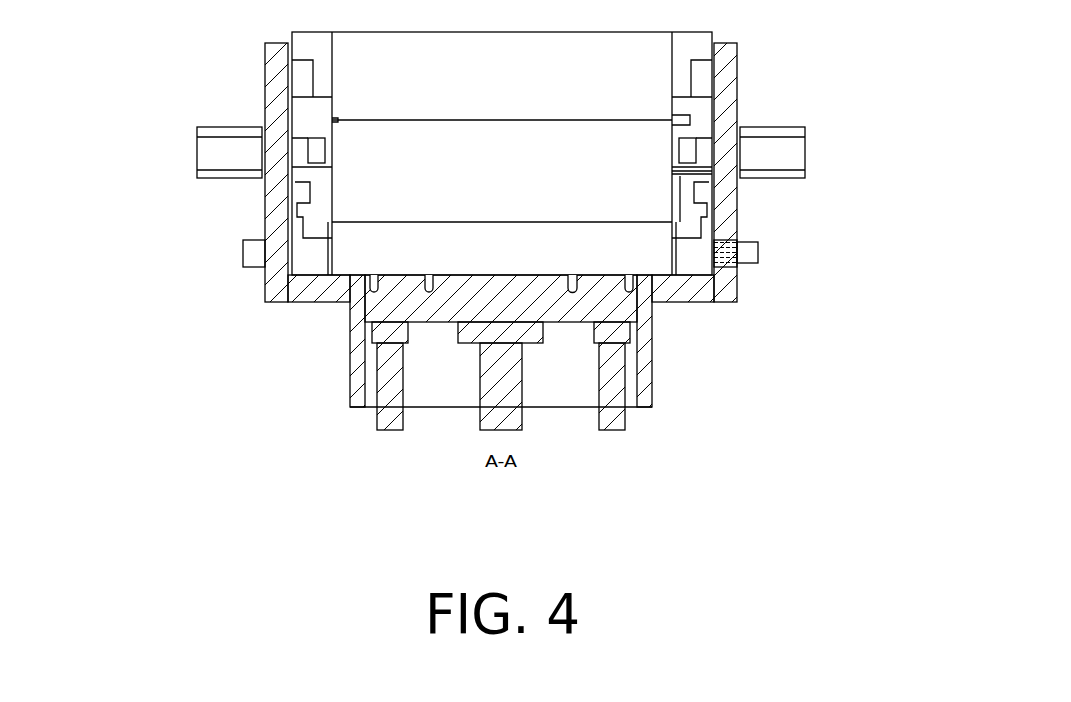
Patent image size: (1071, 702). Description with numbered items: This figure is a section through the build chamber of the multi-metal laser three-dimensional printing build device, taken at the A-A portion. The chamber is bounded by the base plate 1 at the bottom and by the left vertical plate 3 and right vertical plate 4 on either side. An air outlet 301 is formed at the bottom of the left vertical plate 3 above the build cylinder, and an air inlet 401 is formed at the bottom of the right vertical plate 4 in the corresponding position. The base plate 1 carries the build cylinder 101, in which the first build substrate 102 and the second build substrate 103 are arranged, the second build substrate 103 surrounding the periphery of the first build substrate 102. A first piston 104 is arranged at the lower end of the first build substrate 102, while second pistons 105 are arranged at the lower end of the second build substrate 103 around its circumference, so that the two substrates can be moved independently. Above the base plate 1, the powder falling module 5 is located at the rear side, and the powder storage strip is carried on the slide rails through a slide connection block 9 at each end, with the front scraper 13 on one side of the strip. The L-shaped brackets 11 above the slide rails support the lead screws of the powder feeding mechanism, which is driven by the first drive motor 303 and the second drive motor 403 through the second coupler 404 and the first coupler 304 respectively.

The base plate 1 is at (322, 298).
The left vertical plate 3 is at (278, 215).
The right vertical plate 4 is at (735, 300).
The powder falling module 5 is at (390, 168).
The slide connection block 9 is at (693, 203).
The L-shaped bracket 11 is at (708, 173).
The front scraper 13 is at (640, 252).
The build cylinder 101 is at (650, 333).
The first build substrate 102 is at (530, 310).
The second build substrate 103 is at (373, 313).
The first piston 104 is at (497, 343).
The second piston 105 is at (383, 347).
The air outlet 301 is at (250, 248).
The first drive motor 303 is at (225, 143).
The first coupler 304 is at (297, 148).
The air inlet 401 is at (746, 262).
The second drive motor 403 is at (795, 150).
The second coupler 404 is at (707, 147).